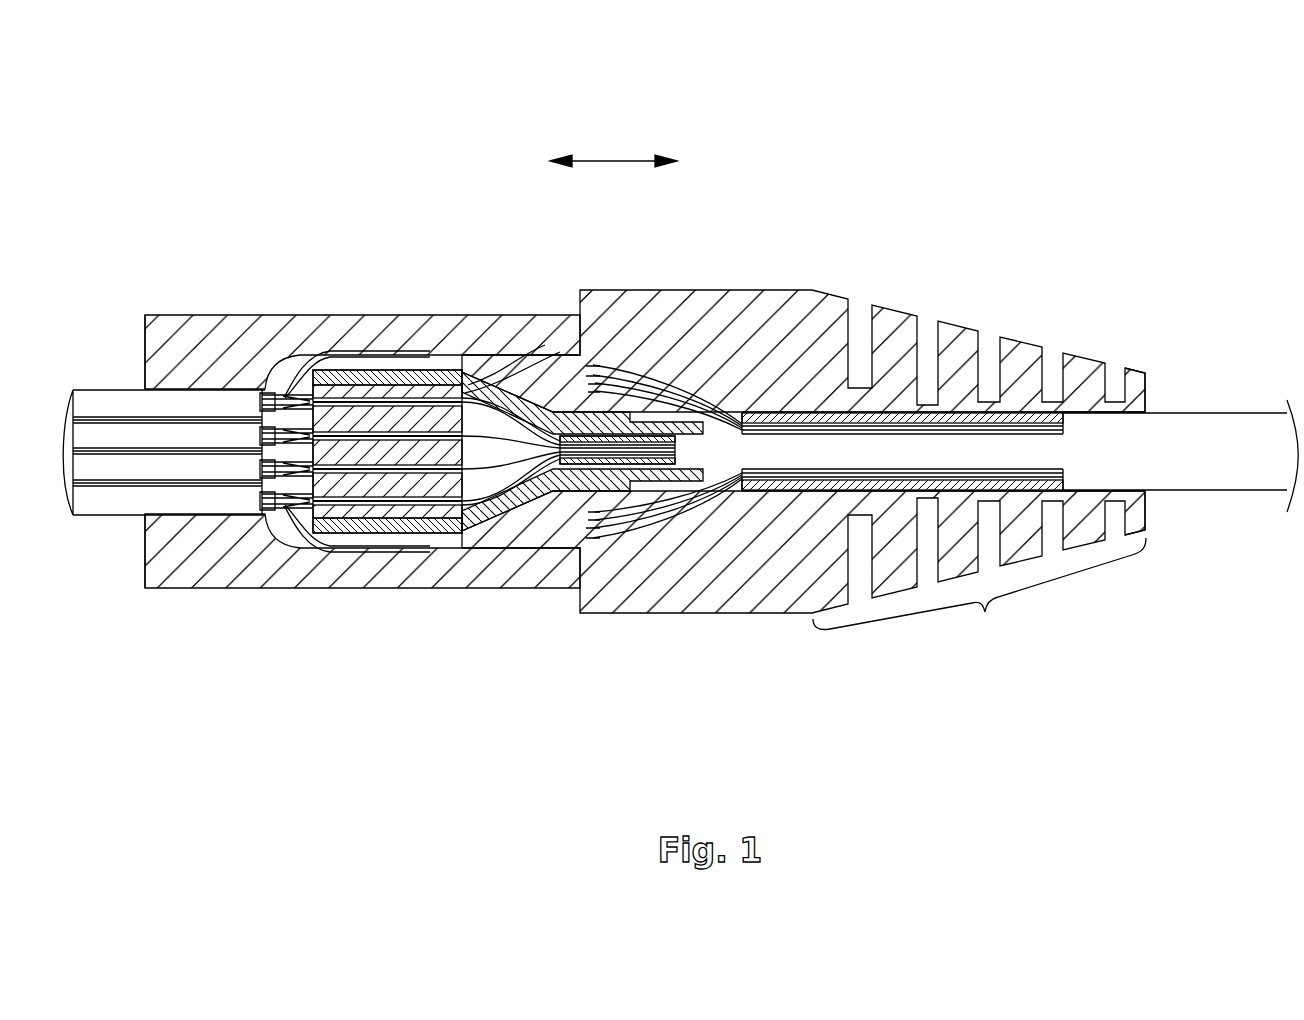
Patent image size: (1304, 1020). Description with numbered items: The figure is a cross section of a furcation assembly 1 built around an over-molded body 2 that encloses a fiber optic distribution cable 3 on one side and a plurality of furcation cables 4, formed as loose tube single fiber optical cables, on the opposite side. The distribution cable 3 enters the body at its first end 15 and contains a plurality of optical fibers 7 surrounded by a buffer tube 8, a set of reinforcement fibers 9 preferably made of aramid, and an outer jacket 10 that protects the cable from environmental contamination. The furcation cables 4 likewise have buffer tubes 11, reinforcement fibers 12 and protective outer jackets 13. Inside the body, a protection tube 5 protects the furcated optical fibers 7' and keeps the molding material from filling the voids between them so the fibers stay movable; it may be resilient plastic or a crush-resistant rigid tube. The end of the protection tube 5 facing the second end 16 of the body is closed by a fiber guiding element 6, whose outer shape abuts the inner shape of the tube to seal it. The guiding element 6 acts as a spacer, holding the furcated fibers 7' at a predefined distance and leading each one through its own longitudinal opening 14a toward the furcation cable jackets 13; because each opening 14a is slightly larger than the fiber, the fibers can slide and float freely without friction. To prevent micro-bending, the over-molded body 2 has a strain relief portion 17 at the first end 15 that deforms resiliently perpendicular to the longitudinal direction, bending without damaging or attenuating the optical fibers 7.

The furcation assembly 1 is at (658, 367).
The over-molded body 2 is at (808, 303).
The fiber optic distribution cable 3 is at (1225, 432).
The furcation cables 4 is at (118, 435).
The protection tube 5 is at (430, 385).
The fiber guiding element 6 is at (480, 530).
The optical fibers 7 is at (568, 455).
The furcated optical fibers 7' is at (584, 348).
The buffer tube 8 is at (716, 458).
The reinforcement fibers 9 is at (606, 548).
The outer jacket 10 is at (932, 418).
The buffer tubes 11 is at (240, 400).
The reinforcement fibers 12 is at (278, 393).
The protective outer jackets 13 is at (122, 558).
The openings 14a is at (345, 380).
The first end 15 is at (1150, 397).
The second end 16 is at (145, 333).
The strain relief portion 17 is at (979, 593).